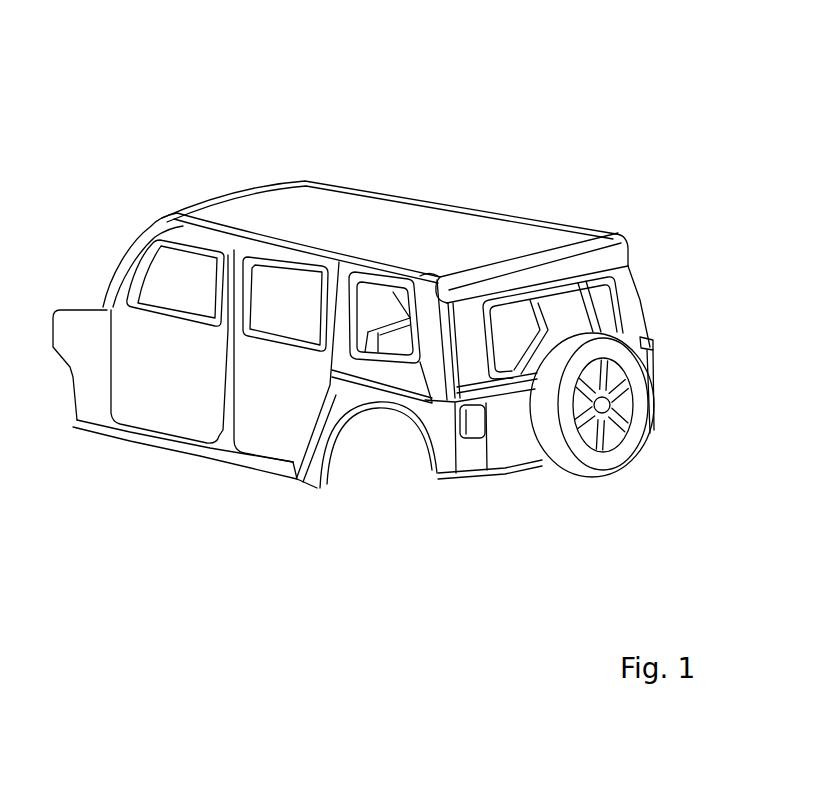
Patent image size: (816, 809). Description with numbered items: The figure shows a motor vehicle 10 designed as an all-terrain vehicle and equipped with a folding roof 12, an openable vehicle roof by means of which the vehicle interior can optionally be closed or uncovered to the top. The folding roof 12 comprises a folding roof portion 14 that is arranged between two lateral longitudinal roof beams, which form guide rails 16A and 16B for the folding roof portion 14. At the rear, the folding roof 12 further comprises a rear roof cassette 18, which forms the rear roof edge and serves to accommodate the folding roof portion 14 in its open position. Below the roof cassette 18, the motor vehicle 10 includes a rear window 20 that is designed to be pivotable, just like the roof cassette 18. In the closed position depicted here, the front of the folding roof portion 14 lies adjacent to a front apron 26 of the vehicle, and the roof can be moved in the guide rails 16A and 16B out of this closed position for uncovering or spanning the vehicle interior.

The motor vehicle 10 is at (577, 150).
The folding roof 12 is at (296, 197).
The folding roof portion 14 is at (387, 208).
The guide rail 16A is at (193, 232).
The guide rail 16B is at (488, 217).
The rear roof cassette 18 is at (608, 257).
The rear window 20 is at (603, 300).
The front apron 26 is at (237, 193).